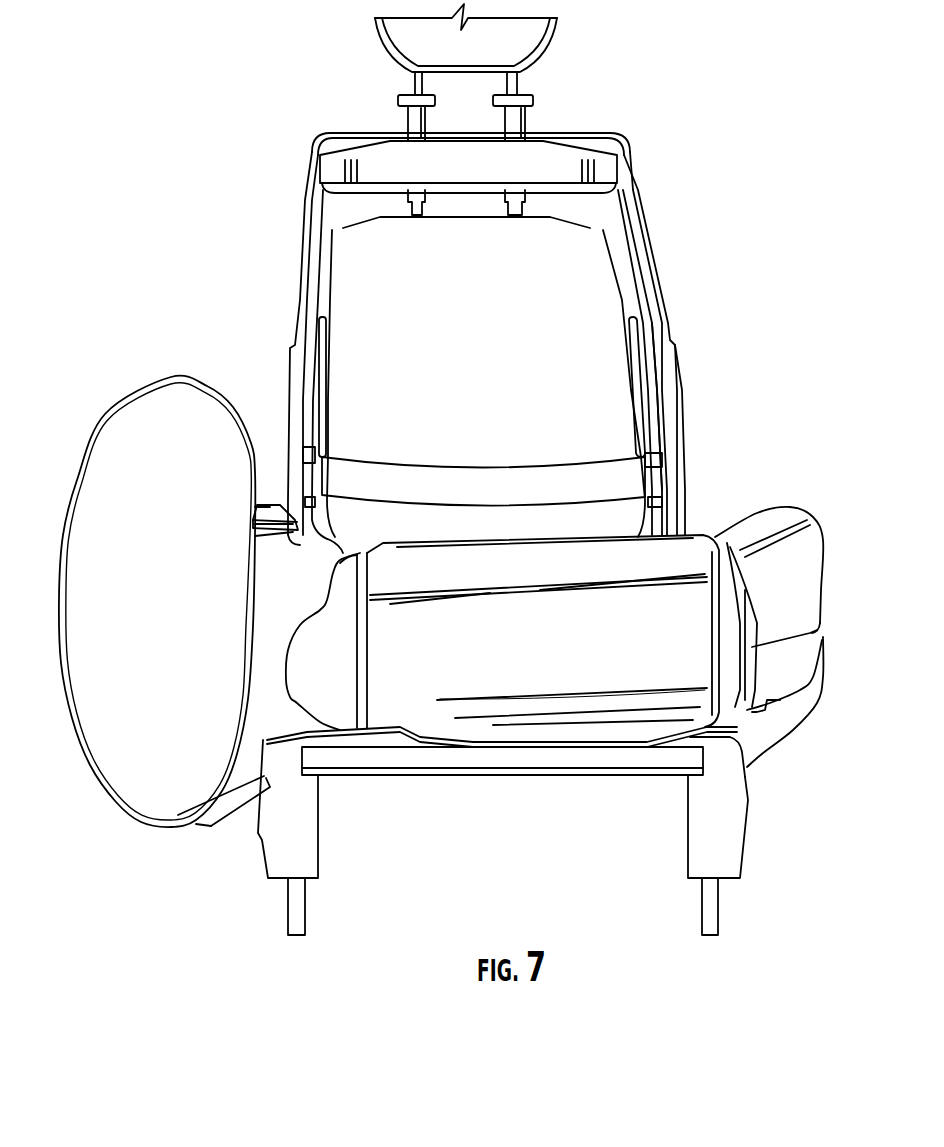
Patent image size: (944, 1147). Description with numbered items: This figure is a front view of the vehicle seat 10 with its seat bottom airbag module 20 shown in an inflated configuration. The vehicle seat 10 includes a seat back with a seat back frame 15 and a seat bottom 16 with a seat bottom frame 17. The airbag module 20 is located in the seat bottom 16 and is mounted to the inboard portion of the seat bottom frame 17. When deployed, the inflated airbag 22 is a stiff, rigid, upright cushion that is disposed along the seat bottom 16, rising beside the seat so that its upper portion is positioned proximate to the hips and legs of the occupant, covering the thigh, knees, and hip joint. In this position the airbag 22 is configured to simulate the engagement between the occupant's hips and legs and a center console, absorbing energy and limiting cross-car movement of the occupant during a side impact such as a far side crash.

The vehicle seat 10 is at (556, 469).
The seat back frame 15 is at (665, 373).
The seat bottom 16 is at (772, 518).
The seat bottom frame 17 is at (773, 725).
The seat bottom airbag module 20 is at (170, 535).
The airbag 22 is at (128, 428).